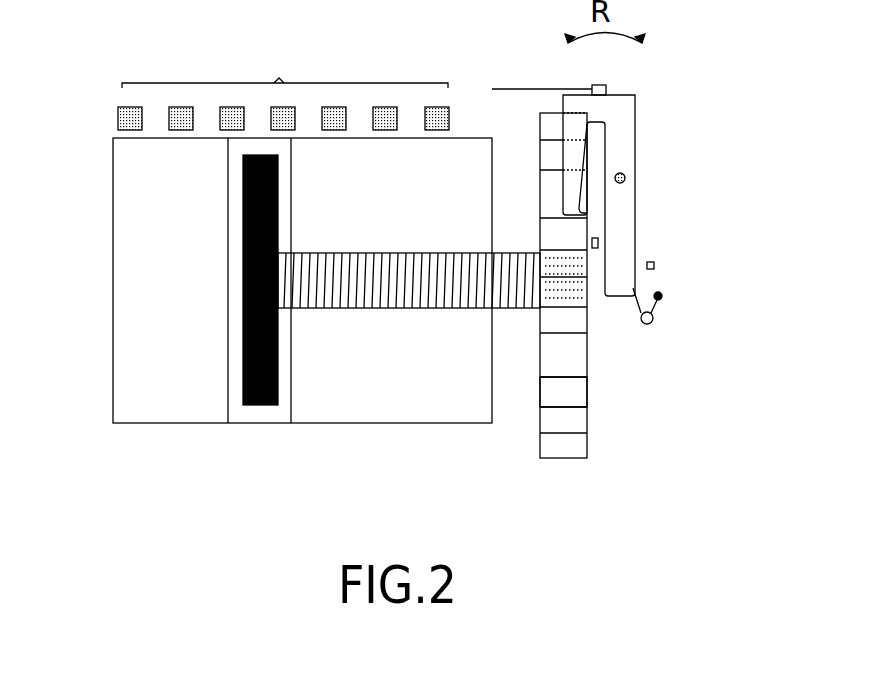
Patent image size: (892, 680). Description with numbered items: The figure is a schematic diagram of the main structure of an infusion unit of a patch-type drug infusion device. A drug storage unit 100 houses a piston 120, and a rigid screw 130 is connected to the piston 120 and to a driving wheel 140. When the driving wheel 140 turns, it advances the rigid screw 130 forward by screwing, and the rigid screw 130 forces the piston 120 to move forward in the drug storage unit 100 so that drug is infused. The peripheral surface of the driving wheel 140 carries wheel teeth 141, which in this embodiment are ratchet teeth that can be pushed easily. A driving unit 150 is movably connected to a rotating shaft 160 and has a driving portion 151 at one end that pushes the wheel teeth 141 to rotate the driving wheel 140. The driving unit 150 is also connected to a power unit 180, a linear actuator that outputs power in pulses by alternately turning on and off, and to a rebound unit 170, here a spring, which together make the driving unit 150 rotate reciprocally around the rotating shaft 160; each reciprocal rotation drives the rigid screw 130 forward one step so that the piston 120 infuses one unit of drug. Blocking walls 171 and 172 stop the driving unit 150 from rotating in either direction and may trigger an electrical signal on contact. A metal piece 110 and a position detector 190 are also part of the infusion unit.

The drug storage unit 100 is at (128, 413).
The metal piece 110 is at (252, 407).
The piston 120 is at (286, 410).
The rigid screw 130 is at (416, 310).
The driving wheel 140 is at (552, 460).
The wheel teeth 141 is at (575, 400).
The driving unit 150 is at (620, 118).
The driving portion 151 is at (590, 210).
The rotating shaft 160 is at (626, 178).
The rebound unit 170 is at (653, 320).
The blocking wall 171 is at (598, 241).
The blocking wall 172 is at (655, 267).
The power unit 180 is at (505, 87).
The position detector 190 is at (279, 78).